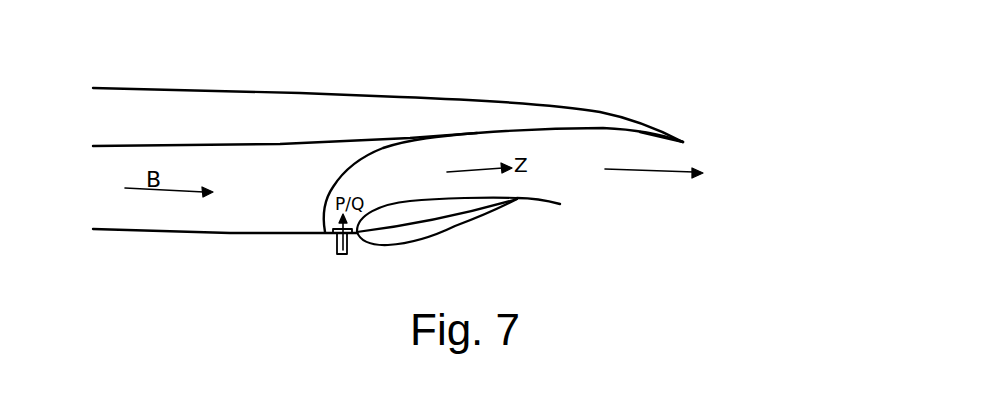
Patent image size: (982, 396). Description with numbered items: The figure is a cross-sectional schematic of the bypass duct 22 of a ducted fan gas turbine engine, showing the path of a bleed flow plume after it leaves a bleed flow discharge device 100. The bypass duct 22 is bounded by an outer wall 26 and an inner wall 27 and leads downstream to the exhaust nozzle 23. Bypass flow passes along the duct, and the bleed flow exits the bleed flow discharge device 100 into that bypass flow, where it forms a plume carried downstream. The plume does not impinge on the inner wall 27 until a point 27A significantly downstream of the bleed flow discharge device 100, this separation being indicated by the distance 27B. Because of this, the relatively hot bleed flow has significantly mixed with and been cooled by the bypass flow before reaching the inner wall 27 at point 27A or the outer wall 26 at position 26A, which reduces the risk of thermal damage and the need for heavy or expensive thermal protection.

The bypass duct 22 is at (265, 199).
The exhaust nozzle 23 is at (670, 138).
The outer wall 26 is at (275, 143).
The outer wall impingement position 26A is at (477, 133).
The inner wall 27 is at (265, 237).
The inner wall impingement point 27A is at (523, 200).
The impingement distance 27B is at (433, 236).
The bleed flow discharge device 100 is at (336, 255).